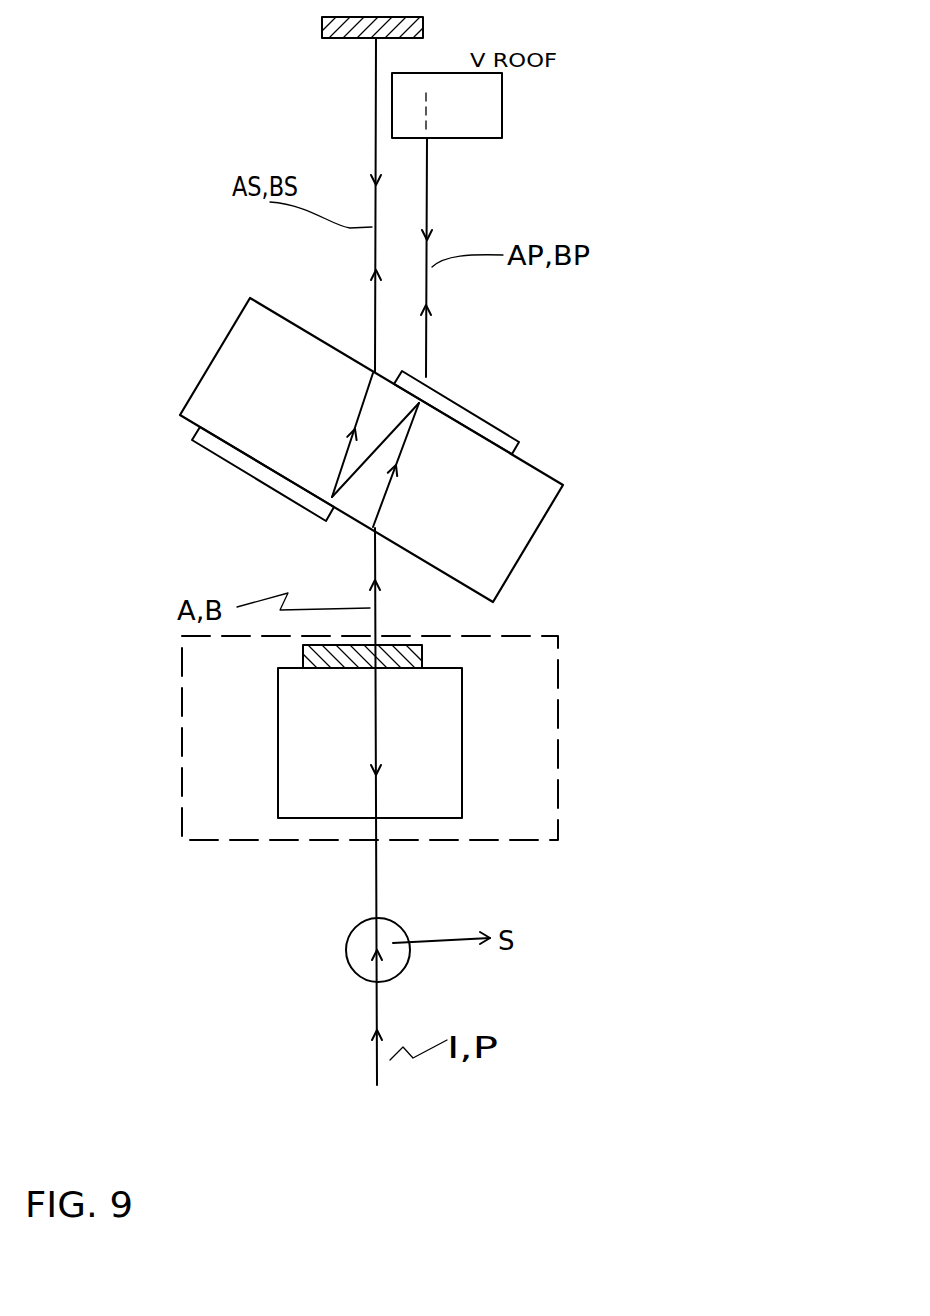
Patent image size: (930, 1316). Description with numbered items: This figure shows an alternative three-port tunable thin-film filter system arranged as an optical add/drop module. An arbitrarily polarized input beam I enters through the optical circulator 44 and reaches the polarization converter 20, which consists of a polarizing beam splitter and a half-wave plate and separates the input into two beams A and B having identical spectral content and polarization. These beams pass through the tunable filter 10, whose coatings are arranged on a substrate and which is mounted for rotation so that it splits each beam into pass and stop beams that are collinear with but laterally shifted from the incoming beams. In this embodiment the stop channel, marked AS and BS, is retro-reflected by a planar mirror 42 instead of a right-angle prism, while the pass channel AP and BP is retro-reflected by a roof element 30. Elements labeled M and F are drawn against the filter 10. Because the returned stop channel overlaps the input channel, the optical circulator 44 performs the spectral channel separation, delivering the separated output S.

The planar mirror 42 is at (310, 27).
The roof prism 30 is at (505, 117).
The tunable filter 10 is at (553, 537).
The plate F is at (513, 443).
The plate M is at (197, 448).
The polarization converter 20 is at (573, 767).
The optical circulator 44 is at (367, 940).